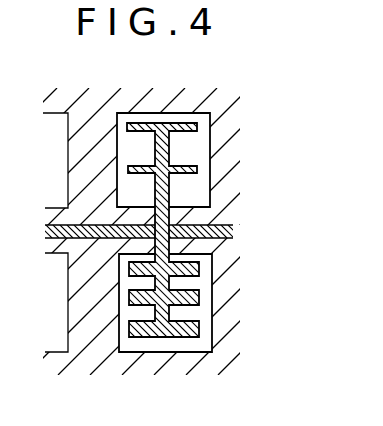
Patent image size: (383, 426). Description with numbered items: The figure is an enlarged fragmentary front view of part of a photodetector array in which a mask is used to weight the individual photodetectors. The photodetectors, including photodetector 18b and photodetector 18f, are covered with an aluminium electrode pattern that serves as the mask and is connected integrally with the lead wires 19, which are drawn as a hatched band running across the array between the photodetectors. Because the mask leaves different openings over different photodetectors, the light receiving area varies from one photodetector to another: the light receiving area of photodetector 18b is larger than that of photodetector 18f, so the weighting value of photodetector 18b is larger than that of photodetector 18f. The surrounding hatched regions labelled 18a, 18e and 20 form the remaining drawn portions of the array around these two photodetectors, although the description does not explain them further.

The core section 18a is at (57, 134).
The photodetector 18b is at (196, 130).
The core section 18e is at (58, 345).
The photodetector 18f is at (204, 344).
The lead wires 19 is at (233, 225).
The core body portion 20 is at (188, 360).